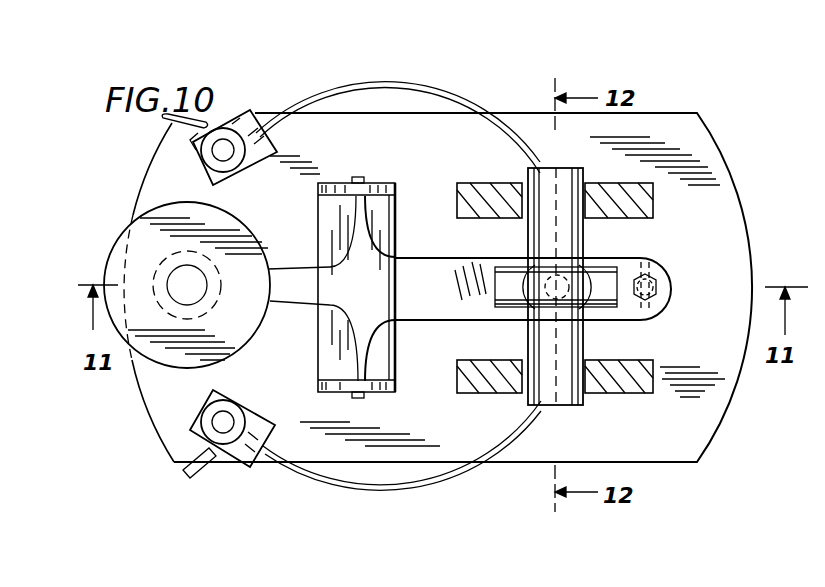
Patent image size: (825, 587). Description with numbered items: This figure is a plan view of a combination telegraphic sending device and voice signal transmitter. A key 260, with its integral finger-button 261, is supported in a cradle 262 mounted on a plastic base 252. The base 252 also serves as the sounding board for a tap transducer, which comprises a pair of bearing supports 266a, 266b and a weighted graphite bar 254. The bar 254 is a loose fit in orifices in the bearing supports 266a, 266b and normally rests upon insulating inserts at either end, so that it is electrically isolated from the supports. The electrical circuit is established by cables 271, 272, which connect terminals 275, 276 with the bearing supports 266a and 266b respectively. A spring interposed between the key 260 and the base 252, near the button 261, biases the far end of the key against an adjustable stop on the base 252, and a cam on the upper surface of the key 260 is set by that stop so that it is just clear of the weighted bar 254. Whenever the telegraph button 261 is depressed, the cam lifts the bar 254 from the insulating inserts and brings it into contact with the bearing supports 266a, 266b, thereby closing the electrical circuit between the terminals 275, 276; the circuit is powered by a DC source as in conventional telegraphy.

The plastic base 252 is at (708, 436).
The weighted graphite bar 254 is at (543, 185).
The key 260 is at (432, 312).
The finger-button 261 is at (190, 222).
The cradle 262 is at (390, 392).
The bearing support 266a is at (673, 348).
The bearing support 266b is at (655, 205).
The cable 271 is at (445, 480).
The cable 272 is at (507, 93).
The terminal 275 is at (240, 448).
The terminal 276 is at (240, 125).